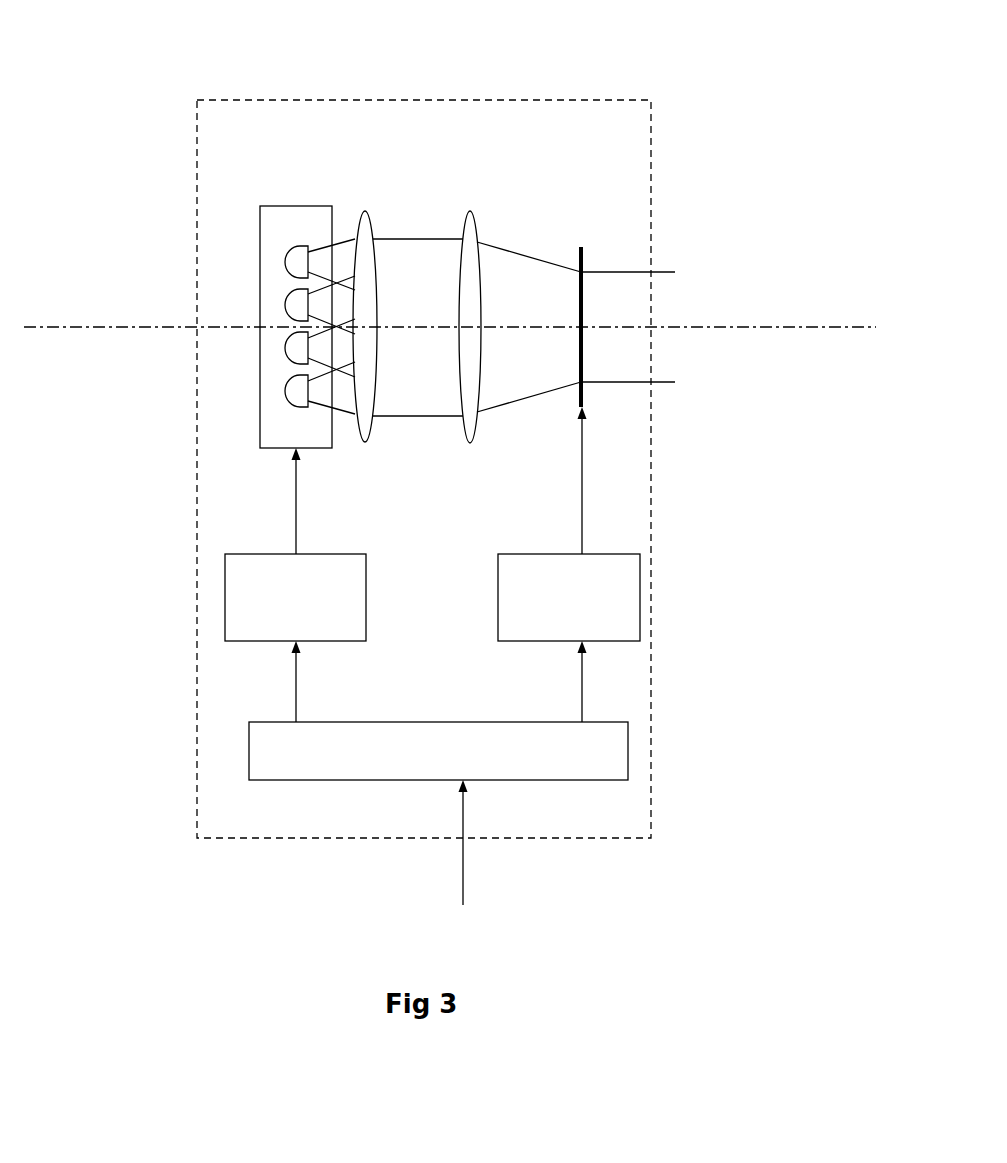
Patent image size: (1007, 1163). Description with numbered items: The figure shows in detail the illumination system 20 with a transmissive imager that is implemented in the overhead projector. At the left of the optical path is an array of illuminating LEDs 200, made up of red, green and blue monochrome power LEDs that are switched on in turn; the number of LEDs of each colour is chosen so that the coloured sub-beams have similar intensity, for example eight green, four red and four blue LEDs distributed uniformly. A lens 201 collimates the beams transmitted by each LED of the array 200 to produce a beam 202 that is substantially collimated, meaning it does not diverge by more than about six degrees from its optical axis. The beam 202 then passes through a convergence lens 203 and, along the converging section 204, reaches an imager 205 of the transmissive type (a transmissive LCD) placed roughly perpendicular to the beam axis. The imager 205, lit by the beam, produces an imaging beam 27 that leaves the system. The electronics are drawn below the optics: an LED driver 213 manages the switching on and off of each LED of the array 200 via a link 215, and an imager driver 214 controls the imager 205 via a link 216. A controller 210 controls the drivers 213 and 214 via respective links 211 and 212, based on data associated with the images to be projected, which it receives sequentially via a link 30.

The illumination system 20 is at (297, 100).
The array of illuminating LEDs 200 is at (272, 212).
The lens 201 is at (355, 235).
The beam 202 is at (437, 245).
The convergence lens 203 is at (468, 223).
The converging light beam 204 is at (533, 272).
The imager 205 is at (577, 245).
The imaging beam 27 is at (640, 280).
The controller 210 is at (617, 733).
The link 211 is at (273, 677).
The link 212 is at (582, 688).
The LED driver 213 is at (238, 605).
The imager driver 214 is at (627, 607).
The link 215 is at (297, 492).
The link 216 is at (582, 502).
The link 30 is at (465, 895).